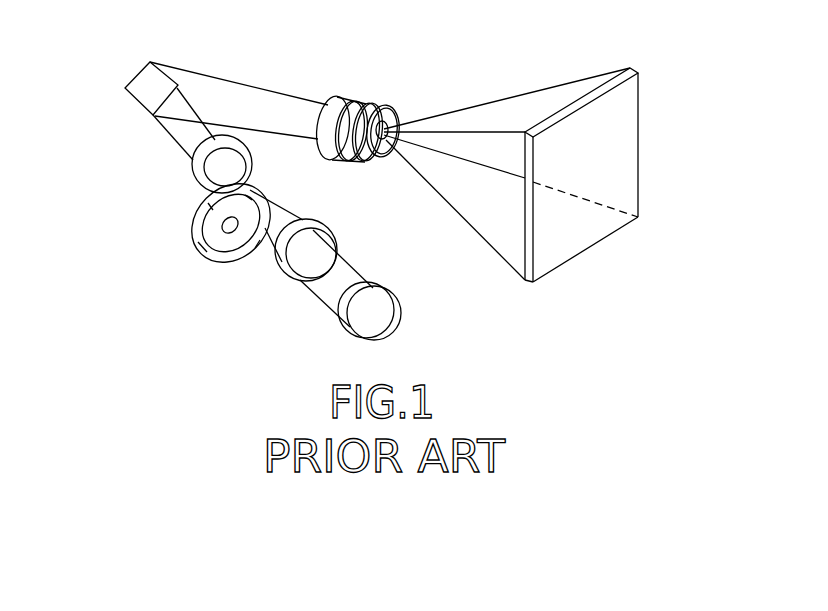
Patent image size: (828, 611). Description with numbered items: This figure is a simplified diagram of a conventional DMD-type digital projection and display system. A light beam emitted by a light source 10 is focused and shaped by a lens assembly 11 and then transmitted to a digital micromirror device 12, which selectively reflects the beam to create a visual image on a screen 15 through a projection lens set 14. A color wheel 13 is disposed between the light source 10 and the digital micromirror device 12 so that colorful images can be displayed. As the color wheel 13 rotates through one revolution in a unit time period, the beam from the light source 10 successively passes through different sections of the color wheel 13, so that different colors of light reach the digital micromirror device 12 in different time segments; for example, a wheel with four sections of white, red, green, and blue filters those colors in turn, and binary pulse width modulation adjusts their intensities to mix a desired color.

The light source 10 is at (377, 310).
The lens assembly 11 is at (193, 170).
The digital micromirror device 12 is at (142, 87).
The color wheel 13 is at (212, 240).
The projection lens set 14 is at (370, 102).
The screen 15 is at (625, 148).